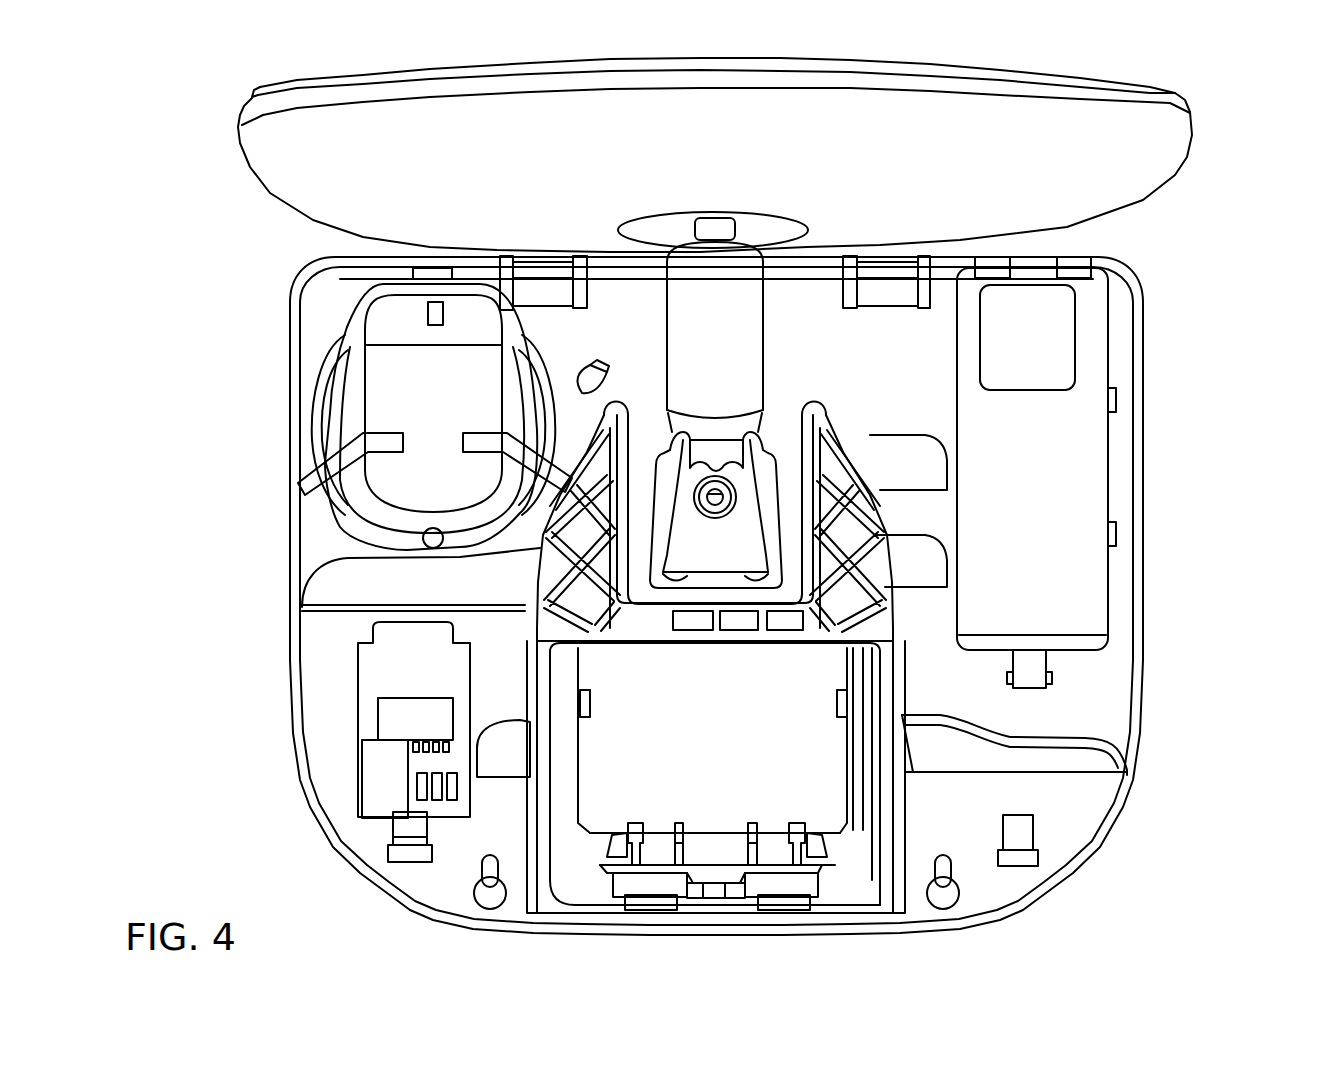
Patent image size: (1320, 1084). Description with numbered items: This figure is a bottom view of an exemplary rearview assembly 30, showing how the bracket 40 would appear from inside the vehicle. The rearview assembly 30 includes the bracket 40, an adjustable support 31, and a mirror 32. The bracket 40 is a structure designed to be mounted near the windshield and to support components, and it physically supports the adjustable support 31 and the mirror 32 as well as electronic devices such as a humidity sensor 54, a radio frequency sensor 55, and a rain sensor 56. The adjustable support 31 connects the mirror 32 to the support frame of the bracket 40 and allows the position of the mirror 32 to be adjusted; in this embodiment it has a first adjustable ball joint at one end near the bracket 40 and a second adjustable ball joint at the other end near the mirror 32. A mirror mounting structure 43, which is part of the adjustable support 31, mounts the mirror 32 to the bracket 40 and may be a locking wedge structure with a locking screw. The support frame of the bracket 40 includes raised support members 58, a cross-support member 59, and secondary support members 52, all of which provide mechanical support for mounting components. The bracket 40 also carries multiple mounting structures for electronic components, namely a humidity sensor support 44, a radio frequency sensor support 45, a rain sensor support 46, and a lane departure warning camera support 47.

The rearview assembly 30 is at (1192, 217).
The adjustable support 31 is at (760, 335).
The mirror 32 is at (1176, 97).
The bracket 40 is at (1128, 665).
The mirror mounting structure 43 is at (670, 475).
The humidity sensor support 44 is at (378, 787).
The radio frequency sensor support 45 is at (990, 267).
The rain sensor support 46 is at (312, 480).
The lane departure warning camera support 47 is at (797, 825).
The secondary support members 52 is at (320, 590).
The humidity sensor 54 is at (385, 717).
The radio frequency sensor 55 is at (1085, 525).
The rain sensor 56 is at (372, 360).
The raised support members 58 is at (525, 640).
The cross-support member 59 is at (812, 412).